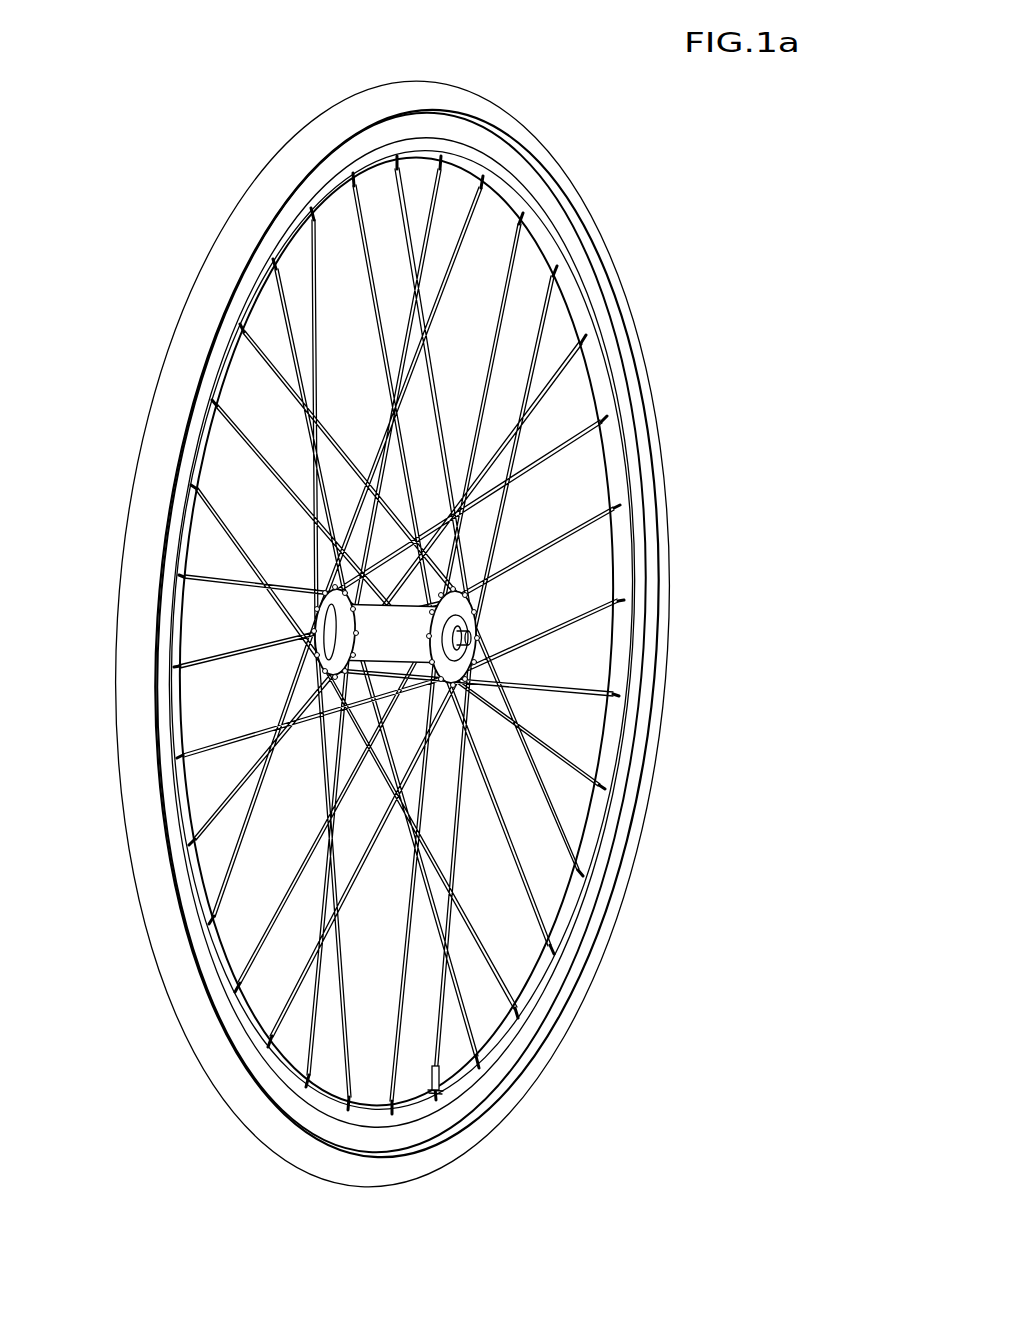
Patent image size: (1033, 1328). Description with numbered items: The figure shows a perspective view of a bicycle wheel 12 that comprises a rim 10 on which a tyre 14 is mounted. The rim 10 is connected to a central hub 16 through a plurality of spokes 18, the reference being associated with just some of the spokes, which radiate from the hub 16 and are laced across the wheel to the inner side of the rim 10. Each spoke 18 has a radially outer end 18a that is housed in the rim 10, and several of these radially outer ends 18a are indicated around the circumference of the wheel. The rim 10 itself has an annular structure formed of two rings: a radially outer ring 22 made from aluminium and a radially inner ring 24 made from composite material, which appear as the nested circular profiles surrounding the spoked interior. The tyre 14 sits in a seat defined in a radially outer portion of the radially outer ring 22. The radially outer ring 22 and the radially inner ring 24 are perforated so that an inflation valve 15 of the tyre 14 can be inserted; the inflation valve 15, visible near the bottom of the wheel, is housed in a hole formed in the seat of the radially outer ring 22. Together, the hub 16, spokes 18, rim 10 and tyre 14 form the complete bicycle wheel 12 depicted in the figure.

The rim 10 is at (641, 396).
The bicycle wheel 12 is at (678, 307).
The tyre 14 is at (409, 97).
The inflation valve 15 is at (437, 1070).
The hub 16 is at (333, 626).
The spokes 18 is at (305, 300).
The radially outer ends 18a is at (306, 246).
The radially outer ring 22 is at (643, 463).
The radially inner ring 24 is at (640, 542).